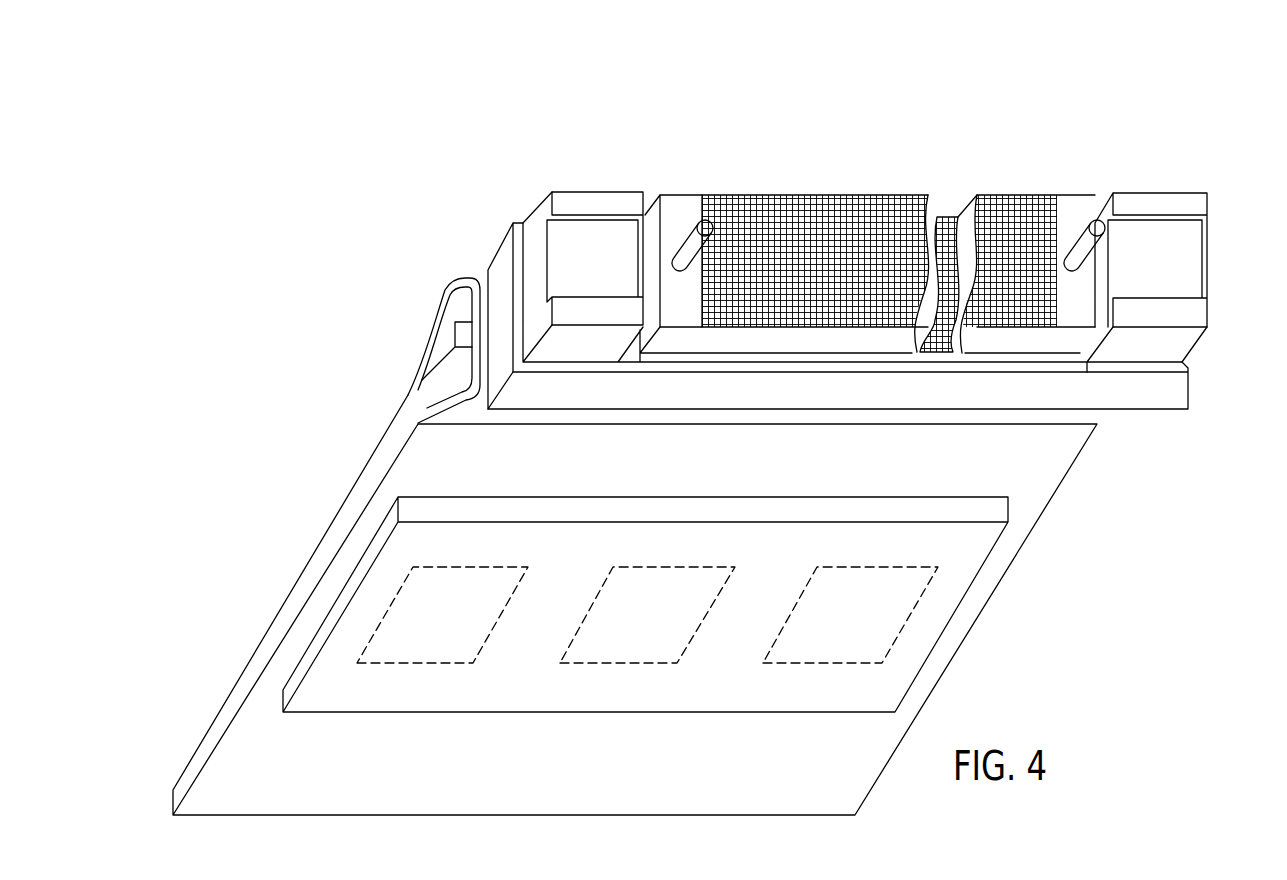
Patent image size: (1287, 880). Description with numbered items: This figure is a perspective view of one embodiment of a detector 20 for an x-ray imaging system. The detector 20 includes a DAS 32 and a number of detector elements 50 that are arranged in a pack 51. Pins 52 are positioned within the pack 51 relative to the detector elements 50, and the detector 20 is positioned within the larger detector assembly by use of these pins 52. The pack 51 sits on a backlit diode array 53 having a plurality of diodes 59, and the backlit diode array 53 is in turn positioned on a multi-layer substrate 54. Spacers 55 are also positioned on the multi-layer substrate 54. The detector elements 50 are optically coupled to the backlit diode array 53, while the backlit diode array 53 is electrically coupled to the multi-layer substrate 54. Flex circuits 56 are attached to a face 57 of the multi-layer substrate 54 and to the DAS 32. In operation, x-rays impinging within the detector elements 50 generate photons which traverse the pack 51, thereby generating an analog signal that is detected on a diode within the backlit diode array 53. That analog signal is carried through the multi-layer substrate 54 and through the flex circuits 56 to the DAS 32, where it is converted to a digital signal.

The detector 20 is at (847, 284).
The DAS 32 is at (990, 577).
The detector elements 50 is at (785, 200).
The pack 51 is at (700, 176).
The pins 52 is at (683, 235).
The backlit diode array 53 is at (1063, 357).
The multi-layer substrate 54 is at (1167, 390).
The spacers 55 is at (588, 195).
The flex circuits 56 is at (443, 393).
The face 57 is at (488, 268).
The diodes 59 is at (950, 217).